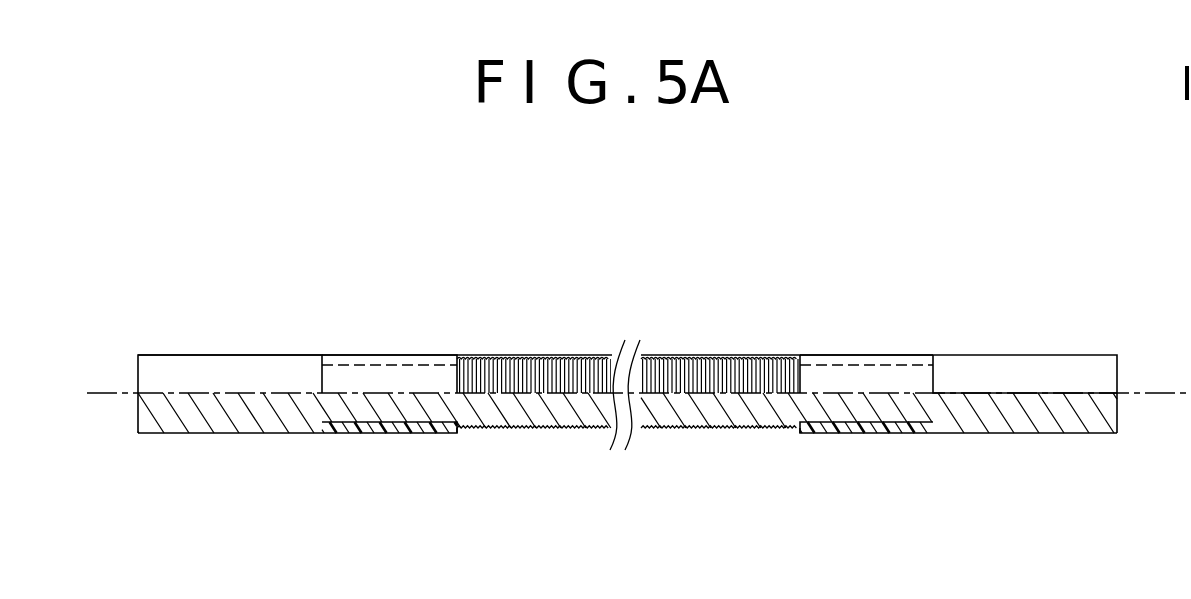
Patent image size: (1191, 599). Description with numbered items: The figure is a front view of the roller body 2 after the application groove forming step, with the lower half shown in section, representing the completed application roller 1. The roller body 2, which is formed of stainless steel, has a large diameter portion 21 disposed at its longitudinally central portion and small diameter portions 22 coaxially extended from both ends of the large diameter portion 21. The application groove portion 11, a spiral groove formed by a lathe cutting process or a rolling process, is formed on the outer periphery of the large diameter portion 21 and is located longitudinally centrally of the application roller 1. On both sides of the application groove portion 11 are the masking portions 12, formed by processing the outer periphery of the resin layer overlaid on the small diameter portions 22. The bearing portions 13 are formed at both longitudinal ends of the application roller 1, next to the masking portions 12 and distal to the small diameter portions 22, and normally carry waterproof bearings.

The application roller 1 is at (985, 252).
The application groove portion 11 is at (660, 357).
The masking portion 12 is at (390, 355).
The bearing portion 13 is at (232, 355).
The roller body 2 is at (1119, 422).
The large diameter portion 21 is at (688, 420).
The small diameter portion 22 is at (869, 415).